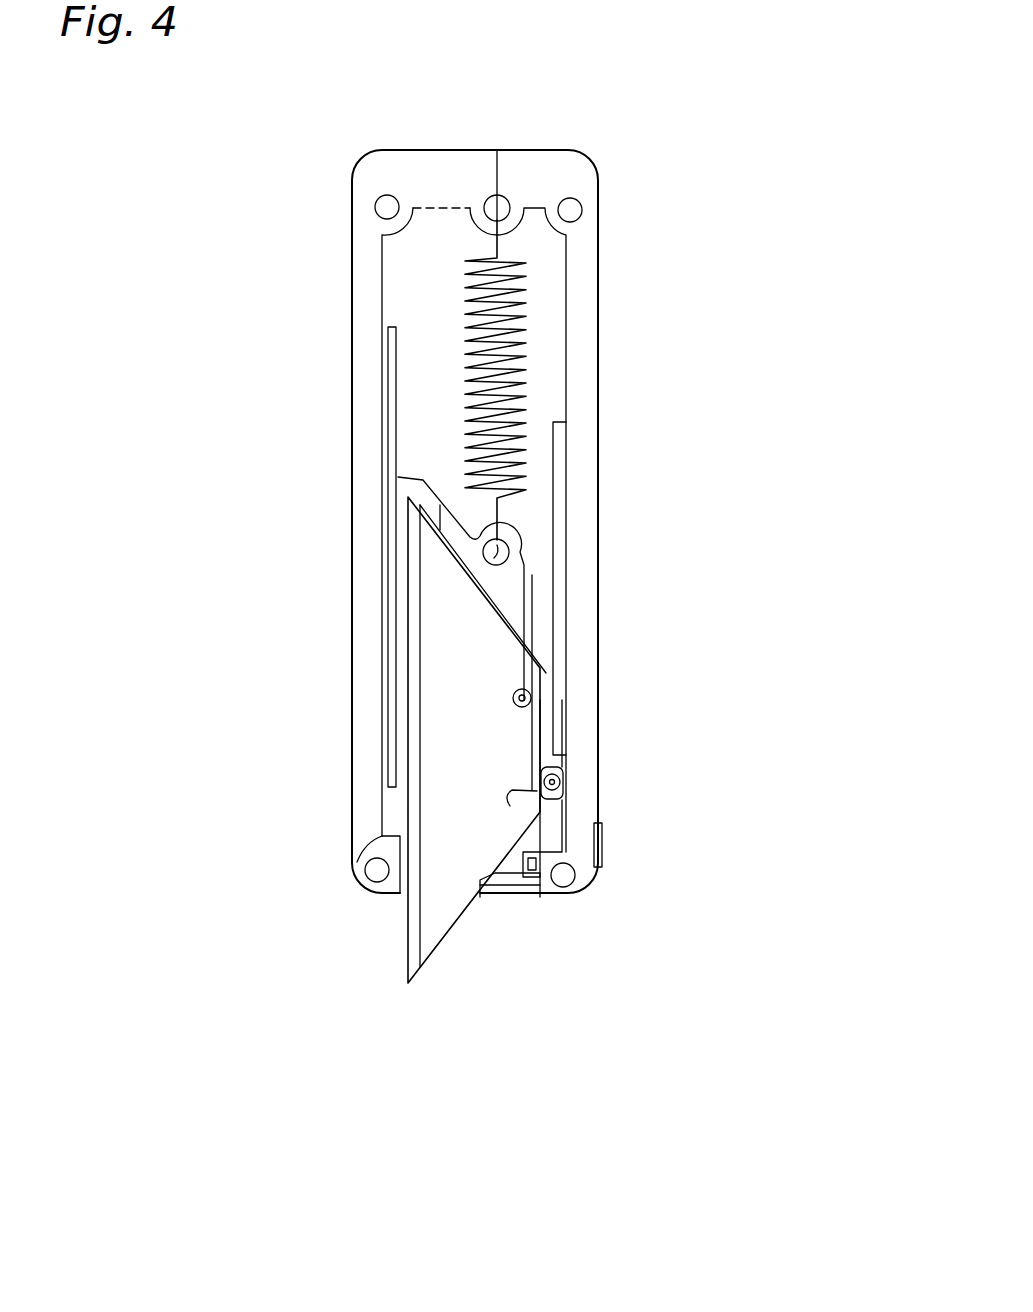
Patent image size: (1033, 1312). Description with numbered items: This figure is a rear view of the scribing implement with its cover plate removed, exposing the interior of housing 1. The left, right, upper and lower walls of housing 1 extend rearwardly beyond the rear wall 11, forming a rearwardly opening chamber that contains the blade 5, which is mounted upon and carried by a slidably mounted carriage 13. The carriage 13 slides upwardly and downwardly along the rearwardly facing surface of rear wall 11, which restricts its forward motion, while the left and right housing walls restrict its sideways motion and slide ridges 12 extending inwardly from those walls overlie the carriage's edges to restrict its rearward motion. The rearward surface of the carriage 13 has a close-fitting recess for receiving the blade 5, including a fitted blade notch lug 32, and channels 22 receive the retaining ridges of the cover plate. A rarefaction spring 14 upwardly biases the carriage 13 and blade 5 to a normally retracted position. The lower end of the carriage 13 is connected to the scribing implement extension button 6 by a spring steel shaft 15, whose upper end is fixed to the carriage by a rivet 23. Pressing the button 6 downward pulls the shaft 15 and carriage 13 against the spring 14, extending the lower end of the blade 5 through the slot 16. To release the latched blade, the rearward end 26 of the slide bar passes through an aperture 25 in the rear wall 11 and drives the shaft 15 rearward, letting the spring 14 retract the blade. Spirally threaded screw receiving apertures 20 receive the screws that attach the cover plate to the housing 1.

The housing 1 is at (524, 170).
The blade 5 is at (438, 903).
The scribing implement extension button 6 is at (598, 866).
The rear wall 11 is at (537, 315).
The slide ridges 12 is at (565, 460).
The carriage 13 is at (540, 613).
The rarefaction spring 14 is at (465, 300).
The spring steel shaft 15 is at (553, 820).
The slot 16 is at (522, 893).
The spirally threaded screw receiving apertures 20 is at (385, 205).
The channels 22 is at (398, 477).
The rivet 23 is at (558, 778).
The aperture 25 is at (497, 890).
The rearward end 26 is at (547, 890).
The blade notch lug 32 is at (530, 698).